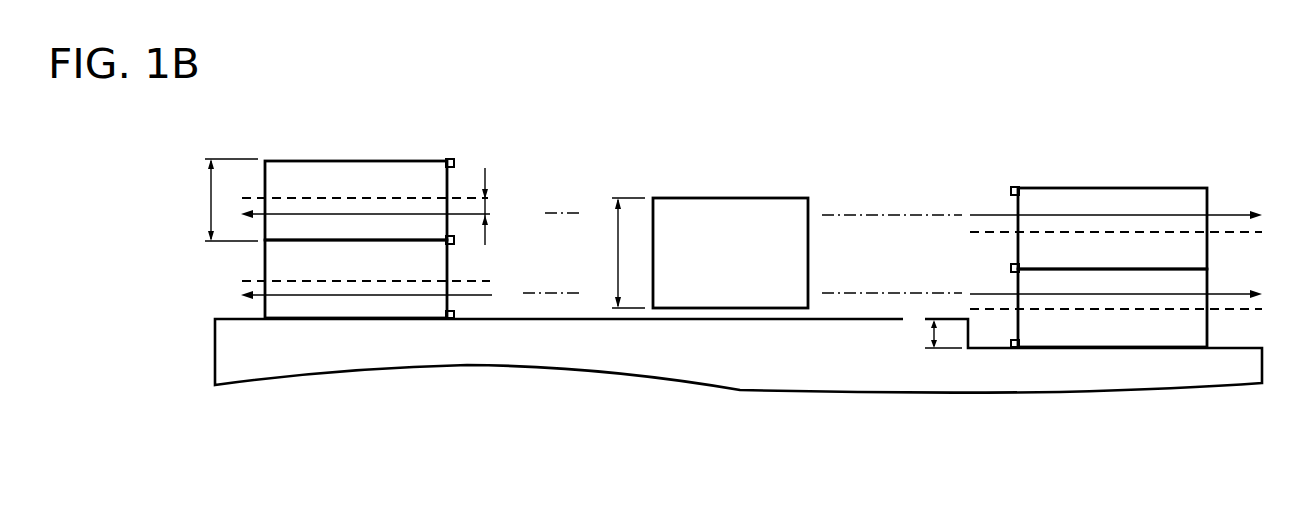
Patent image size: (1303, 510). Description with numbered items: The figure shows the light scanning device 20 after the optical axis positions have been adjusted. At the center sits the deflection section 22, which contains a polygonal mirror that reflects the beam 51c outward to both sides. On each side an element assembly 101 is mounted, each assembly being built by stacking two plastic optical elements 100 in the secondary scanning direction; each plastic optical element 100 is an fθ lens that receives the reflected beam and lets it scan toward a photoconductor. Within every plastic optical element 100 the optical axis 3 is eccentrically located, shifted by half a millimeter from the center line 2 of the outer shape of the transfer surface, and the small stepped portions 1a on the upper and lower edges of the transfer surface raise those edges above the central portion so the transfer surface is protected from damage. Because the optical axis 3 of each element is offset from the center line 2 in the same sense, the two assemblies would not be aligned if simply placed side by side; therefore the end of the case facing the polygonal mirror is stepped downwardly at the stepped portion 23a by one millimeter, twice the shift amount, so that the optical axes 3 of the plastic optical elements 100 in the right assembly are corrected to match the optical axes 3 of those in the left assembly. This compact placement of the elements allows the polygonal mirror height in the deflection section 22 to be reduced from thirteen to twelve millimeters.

The light scanning device 20 is at (1252, 145).
The element assembly 101 is at (739, 217).
The plastic optical element 100 is at (381, 172).
The stepped portion 1a is at (452, 160).
The center line of the outer shape 2 is at (282, 198).
The optical axis 3 is at (275, 215).
The deflection section 22 is at (782, 197).
The beam 51c is at (549, 212).
The stepped portion of the case 23a is at (1090, 350).